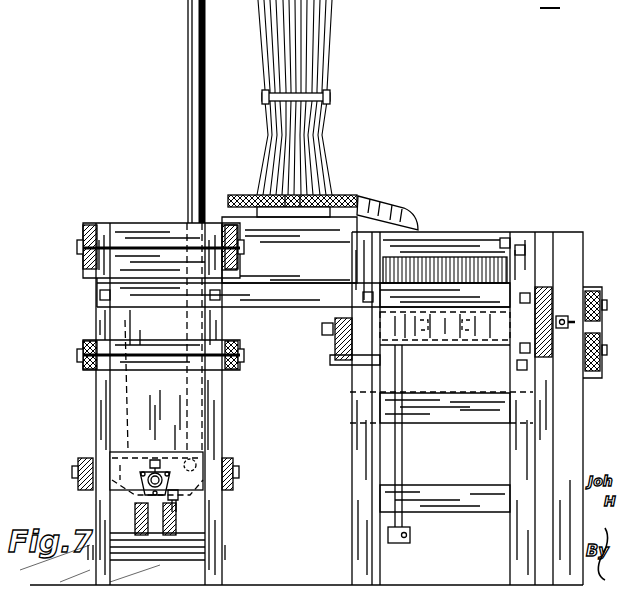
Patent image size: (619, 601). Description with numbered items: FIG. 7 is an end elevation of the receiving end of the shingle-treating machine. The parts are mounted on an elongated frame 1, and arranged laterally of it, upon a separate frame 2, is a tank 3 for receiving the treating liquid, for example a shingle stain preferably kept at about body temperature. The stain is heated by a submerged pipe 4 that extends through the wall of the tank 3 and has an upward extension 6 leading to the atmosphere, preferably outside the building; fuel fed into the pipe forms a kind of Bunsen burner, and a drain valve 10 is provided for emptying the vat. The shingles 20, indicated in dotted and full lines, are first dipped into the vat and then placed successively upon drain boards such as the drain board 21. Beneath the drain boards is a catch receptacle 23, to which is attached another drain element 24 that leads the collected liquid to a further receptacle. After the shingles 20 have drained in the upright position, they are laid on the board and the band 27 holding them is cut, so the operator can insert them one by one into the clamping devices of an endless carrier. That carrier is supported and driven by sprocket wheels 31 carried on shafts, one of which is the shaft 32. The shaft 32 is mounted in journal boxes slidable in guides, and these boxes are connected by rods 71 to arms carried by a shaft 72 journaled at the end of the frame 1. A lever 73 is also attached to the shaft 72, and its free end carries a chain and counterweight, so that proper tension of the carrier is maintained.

The frame 1 is at (573, 441).
The separate frame 2 is at (216, 430).
The tank 3 is at (140, 405).
The submerged pipe 4 is at (195, 470).
The upward extension 6 is at (196, 82).
The drain valve 10 is at (180, 511).
The shingles 20 is at (308, 128).
The drain board 21 is at (335, 197).
The catch receptacle 23 is at (333, 222).
The drain element 24 is at (390, 206).
The band 27 is at (325, 92).
The sprocket wheels 31 is at (507, 297).
The shaft 32 is at (445, 318).
The rods 71 is at (322, 329).
The shaft 72 is at (478, 393).
The lever 73 is at (403, 450).